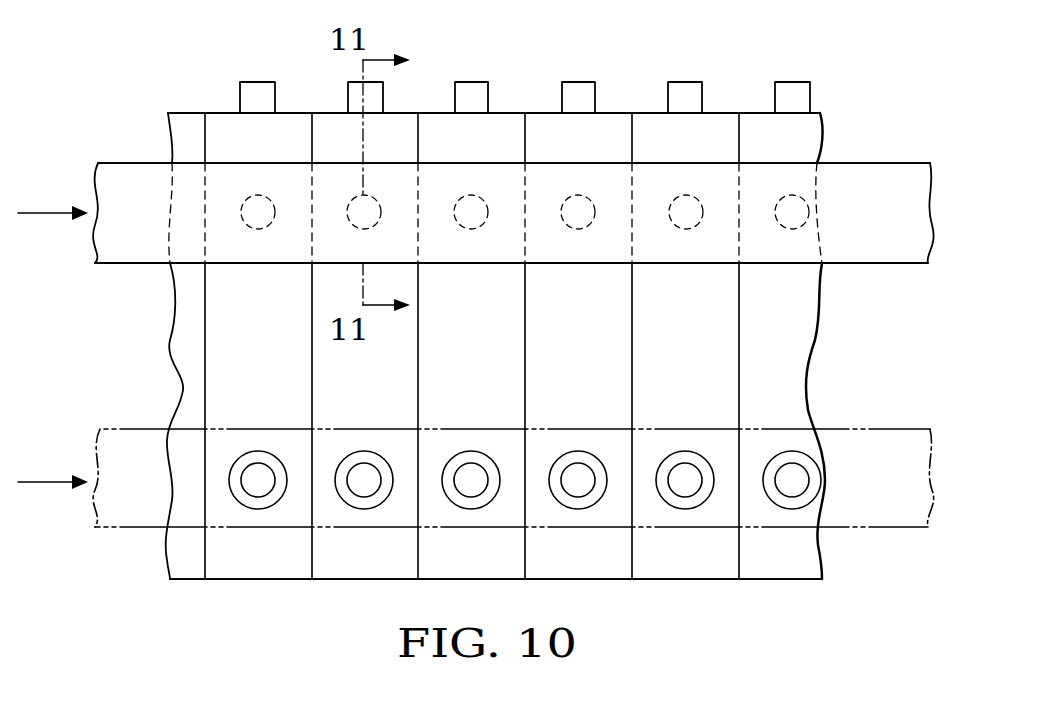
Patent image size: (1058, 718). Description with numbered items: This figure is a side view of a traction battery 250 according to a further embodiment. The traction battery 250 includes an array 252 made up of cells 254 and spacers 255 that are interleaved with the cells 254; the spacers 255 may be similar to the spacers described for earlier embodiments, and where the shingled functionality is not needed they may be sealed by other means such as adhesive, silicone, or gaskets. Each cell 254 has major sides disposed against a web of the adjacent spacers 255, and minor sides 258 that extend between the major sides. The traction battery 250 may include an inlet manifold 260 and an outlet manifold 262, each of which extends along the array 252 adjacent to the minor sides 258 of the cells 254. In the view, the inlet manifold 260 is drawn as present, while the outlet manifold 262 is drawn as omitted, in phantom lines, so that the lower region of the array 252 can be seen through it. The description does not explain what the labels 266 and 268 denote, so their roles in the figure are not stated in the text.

The traction battery 250 is at (748, 34).
The array 252 is at (541, 113).
The cells 254 is at (614, 98).
The spacers 255 is at (800, 360).
The minor sides 258 is at (688, 568).
The inlet manifold 260 is at (873, 178).
The outlet manifold 262 is at (872, 515).
The middle region 266 is at (595, 358).
The hidden openings 268 is at (250, 200).